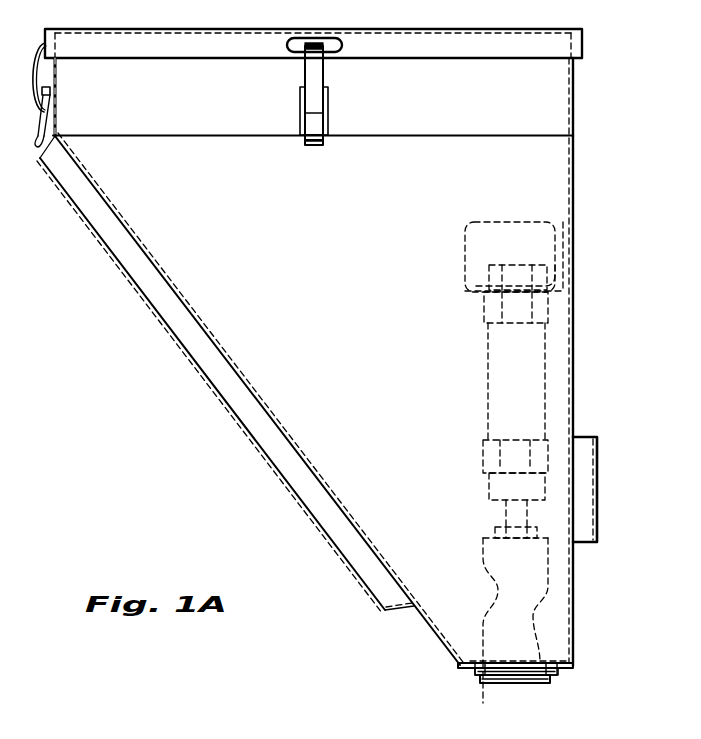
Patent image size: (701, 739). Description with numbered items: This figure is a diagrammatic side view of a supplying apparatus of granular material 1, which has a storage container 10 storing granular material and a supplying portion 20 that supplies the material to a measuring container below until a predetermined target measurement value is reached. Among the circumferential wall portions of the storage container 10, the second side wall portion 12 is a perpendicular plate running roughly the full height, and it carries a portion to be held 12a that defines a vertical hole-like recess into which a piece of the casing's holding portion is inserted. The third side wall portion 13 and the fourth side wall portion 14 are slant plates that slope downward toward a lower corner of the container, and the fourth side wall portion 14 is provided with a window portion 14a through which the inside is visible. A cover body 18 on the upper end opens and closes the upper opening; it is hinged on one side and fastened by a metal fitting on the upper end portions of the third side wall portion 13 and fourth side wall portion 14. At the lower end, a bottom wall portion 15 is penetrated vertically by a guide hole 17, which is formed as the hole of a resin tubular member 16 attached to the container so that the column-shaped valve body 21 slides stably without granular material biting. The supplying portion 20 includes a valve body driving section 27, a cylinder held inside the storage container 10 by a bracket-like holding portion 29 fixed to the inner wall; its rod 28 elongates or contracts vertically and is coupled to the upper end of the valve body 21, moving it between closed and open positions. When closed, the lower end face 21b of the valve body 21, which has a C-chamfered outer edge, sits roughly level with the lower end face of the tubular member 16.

The supplying apparatus of granular material 1 is at (650, 560).
The storage container 10 is at (590, 556).
The second side wall portion 12 is at (575, 319).
The portion to be held 12a is at (587, 488).
The third side wall portion 13 is at (556, 116).
The fourth side wall portion 14 is at (150, 265).
The window portion 14a is at (158, 313).
The bottom wall portion 15 is at (460, 675).
The tubular member 16 is at (557, 677).
The guide hole 17 is at (484, 694).
The cover body 18 is at (418, 48).
The supplying portion 20 is at (556, 611).
The valve body 21 is at (476, 563).
The lower end face 21b is at (523, 687).
The valve body driving section 27 is at (480, 370).
The rod 28 is at (504, 512).
The bracket-like holding portion 29 is at (566, 222).